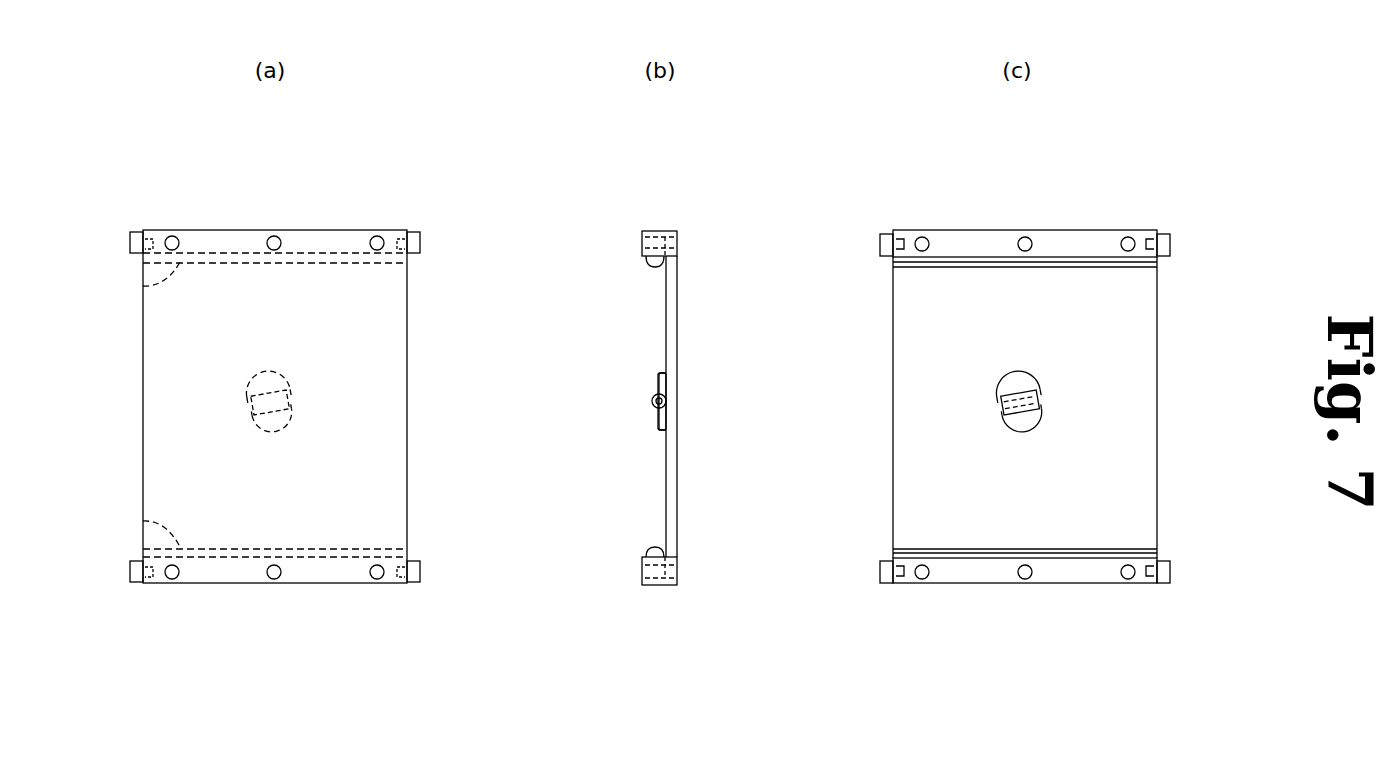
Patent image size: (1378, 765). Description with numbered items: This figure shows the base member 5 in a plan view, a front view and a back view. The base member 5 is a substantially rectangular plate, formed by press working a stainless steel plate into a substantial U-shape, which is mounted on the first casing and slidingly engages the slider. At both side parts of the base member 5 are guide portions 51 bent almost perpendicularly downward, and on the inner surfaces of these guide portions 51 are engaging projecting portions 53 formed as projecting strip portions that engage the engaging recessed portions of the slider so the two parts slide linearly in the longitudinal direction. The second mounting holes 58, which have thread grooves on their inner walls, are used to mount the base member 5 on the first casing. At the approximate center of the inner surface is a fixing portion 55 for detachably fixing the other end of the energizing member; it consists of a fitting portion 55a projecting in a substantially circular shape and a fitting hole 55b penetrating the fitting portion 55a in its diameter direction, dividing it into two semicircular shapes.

The base member 5 is at (414, 404).
The guide portion 51 is at (664, 230).
The engaging projecting portion 53 is at (143, 286).
The fixing portion 55 is at (238, 384).
The fitting portion 55a is at (253, 427).
The fitting hole 55b is at (652, 400).
The second mounting hole 58 is at (922, 236).